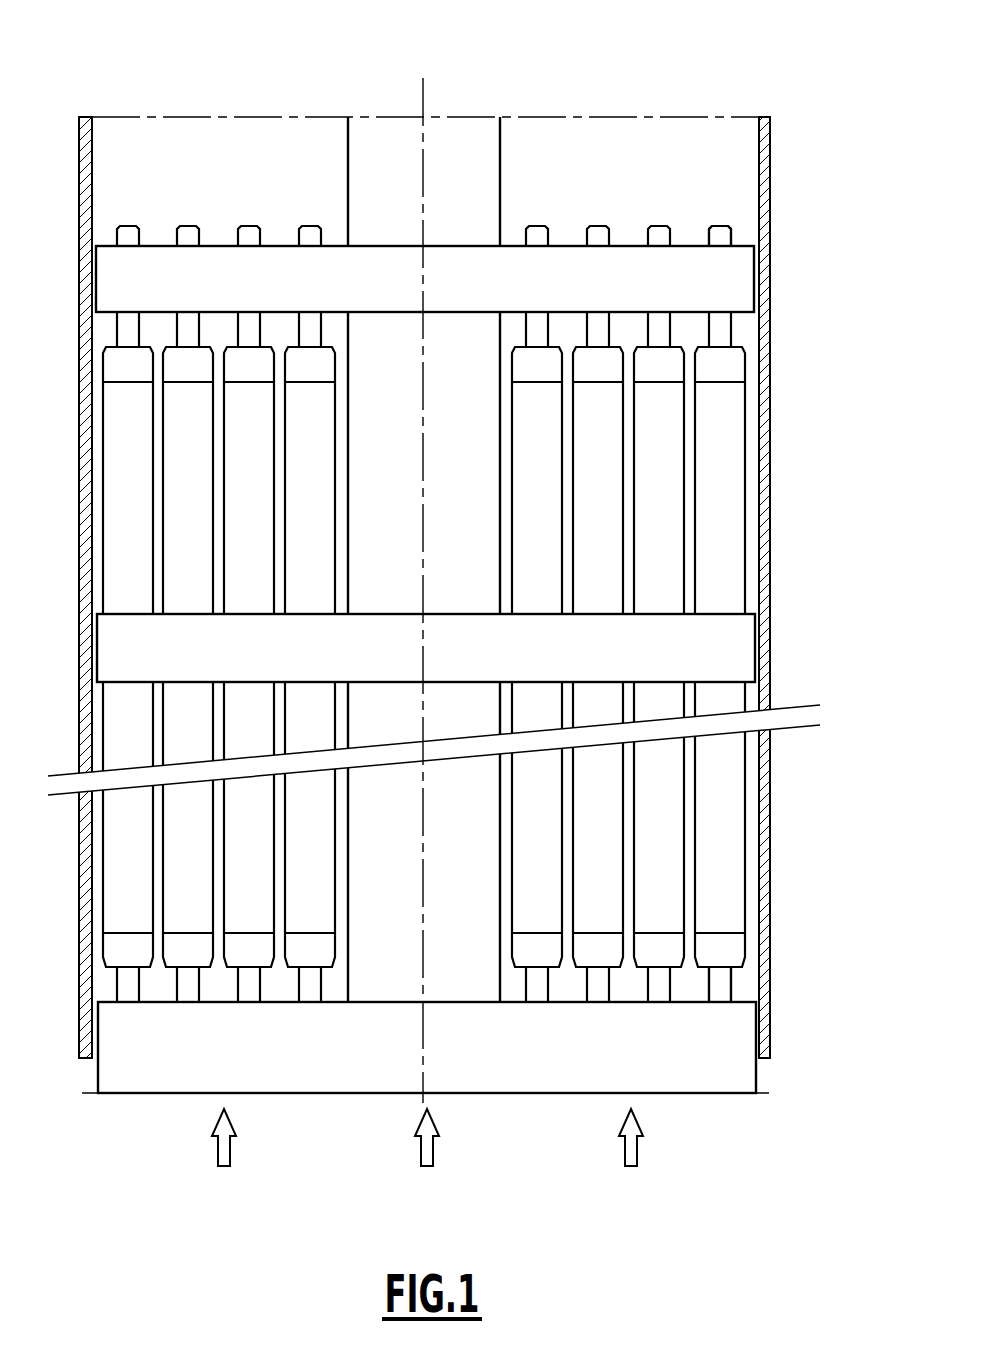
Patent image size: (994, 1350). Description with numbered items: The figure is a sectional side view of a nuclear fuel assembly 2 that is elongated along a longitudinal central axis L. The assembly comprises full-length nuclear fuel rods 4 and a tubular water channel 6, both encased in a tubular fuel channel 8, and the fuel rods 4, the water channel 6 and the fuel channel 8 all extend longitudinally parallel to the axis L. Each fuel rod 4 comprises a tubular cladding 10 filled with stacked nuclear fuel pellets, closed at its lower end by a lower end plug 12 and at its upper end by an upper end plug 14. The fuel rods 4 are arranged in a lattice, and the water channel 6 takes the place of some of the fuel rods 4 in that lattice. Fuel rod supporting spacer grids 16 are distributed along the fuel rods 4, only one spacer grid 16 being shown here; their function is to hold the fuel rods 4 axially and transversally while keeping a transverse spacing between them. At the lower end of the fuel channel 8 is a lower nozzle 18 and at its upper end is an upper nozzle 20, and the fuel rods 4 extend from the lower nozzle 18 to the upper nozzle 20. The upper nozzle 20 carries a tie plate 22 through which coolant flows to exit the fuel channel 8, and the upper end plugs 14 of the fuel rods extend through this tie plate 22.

The nuclear fuel assembly 2 is at (433, 585).
The nuclear fuel rods 4 is at (433, 566).
The tubular water channel 6 is at (483, 207).
The tubular fuel channel 8 is at (770, 170).
The tubular cladding 10 is at (668, 533).
The lower end plug 12 is at (728, 985).
The upper end plug 14 is at (725, 236).
The spacer grid 16 is at (725, 652).
The lower nozzle 18 is at (715, 1043).
The upper nozzle 20 is at (688, 236).
The tie plate 22 is at (632, 262).